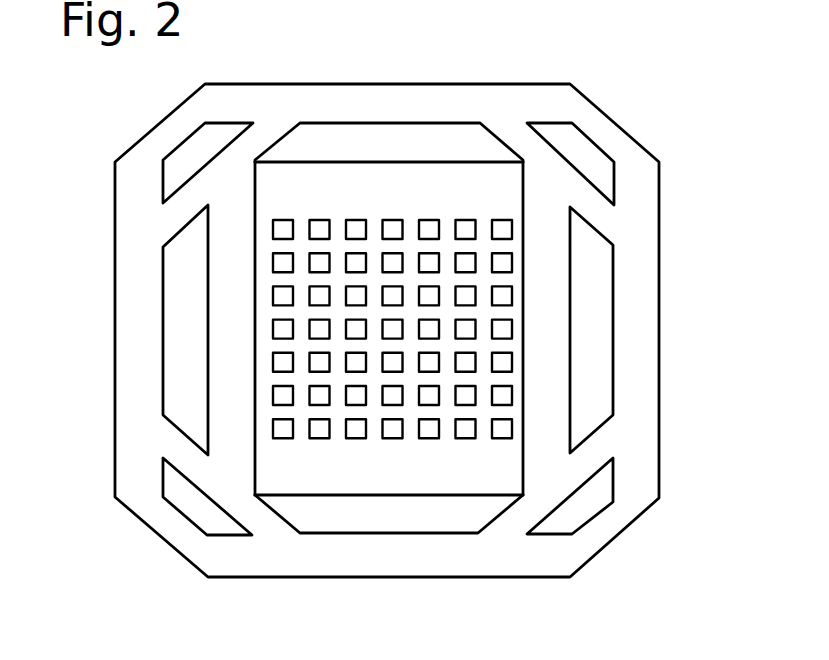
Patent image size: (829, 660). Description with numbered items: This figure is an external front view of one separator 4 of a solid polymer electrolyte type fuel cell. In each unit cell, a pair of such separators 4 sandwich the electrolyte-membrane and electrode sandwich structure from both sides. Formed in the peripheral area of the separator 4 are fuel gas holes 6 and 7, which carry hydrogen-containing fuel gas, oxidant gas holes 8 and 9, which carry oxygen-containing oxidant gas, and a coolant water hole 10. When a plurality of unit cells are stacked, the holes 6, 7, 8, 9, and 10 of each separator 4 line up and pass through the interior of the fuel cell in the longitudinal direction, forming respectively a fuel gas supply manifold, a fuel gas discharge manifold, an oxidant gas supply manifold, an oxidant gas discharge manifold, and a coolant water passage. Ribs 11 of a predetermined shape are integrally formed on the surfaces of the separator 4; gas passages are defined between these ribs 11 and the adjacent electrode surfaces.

The separator 4 is at (545, 83).
The fuel gas hole 6 is at (378, 137).
The fuel gas hole 7 is at (387, 525).
The oxidant gas hole 8 is at (175, 322).
The oxidant gas hole 9 is at (595, 325).
The coolant water hole 10 is at (185, 148).
The rib 11 is at (273, 362).